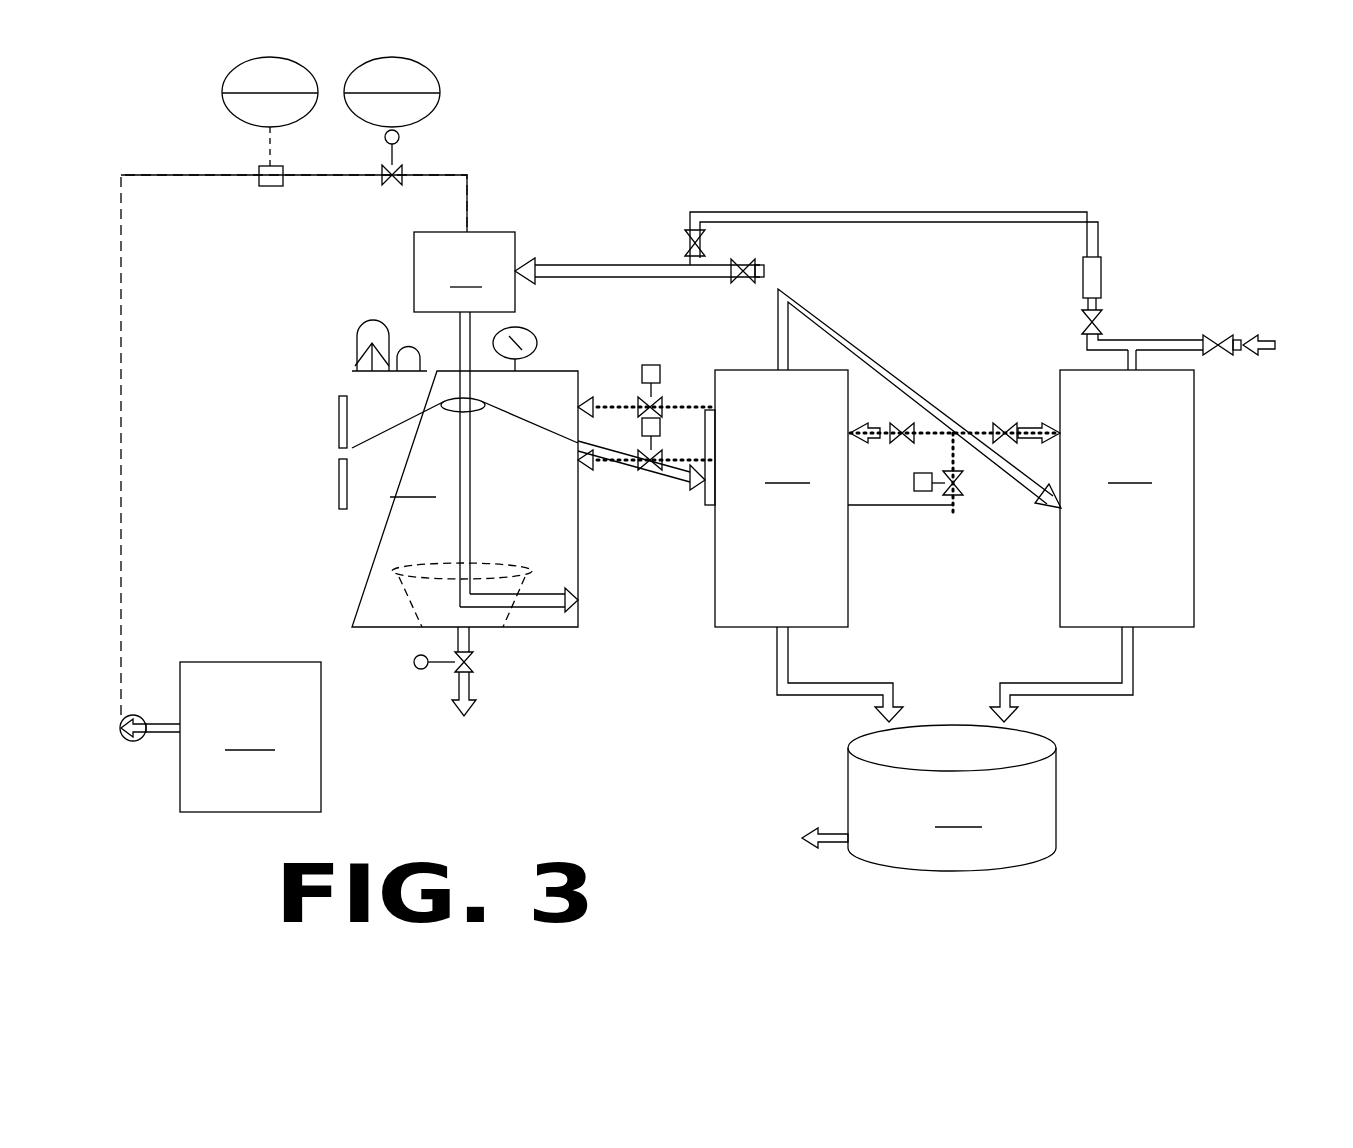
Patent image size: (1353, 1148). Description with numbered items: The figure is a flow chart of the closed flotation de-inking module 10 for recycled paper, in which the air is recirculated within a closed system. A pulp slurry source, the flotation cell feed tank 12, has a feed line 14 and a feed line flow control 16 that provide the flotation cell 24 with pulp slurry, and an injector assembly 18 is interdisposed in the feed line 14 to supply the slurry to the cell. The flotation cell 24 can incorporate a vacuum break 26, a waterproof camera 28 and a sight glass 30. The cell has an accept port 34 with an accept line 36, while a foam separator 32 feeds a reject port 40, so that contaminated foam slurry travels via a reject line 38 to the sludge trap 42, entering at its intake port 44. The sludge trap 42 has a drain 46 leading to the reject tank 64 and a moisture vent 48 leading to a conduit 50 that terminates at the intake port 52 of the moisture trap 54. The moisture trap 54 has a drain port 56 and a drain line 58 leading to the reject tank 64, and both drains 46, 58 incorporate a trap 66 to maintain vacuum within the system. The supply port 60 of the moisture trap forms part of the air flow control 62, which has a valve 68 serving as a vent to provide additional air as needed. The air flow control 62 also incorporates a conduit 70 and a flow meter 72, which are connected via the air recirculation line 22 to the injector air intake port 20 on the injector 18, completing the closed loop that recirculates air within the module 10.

The closed flotation de-inking module 10 is at (748, 140).
The flotation cell feed tank 12 is at (220, 737).
The feed line 14 is at (152, 175).
The feed line flow control 16 is at (452, 95).
The injector 18 is at (464, 272).
The injector air intake port 20 is at (527, 267).
The air recirculation line 22 is at (826, 213).
The flotation cell 24 is at (465, 469).
The vacuum break 26 is at (345, 332).
The waterproof camera 28 is at (407, 348).
The sight glass 30 is at (337, 480).
The separator 32 is at (380, 436).
The accept port 34 is at (464, 628).
The accept line 36 is at (468, 710).
The reject line 38 is at (683, 470).
The reject port 40 is at (578, 433).
The sludge trap 42 is at (781, 498).
The intake port 44 is at (714, 478).
The drain 46 is at (780, 630).
The moisture vent 48 is at (785, 372).
The conduit 50 is at (873, 360).
The intake port 52 is at (1062, 507).
The moisture trap 54 is at (1127, 498).
The drain port 56 is at (1128, 630).
The drain line 58 is at (1073, 690).
The supply port 60 is at (1132, 373).
The air flow control 62 is at (1200, 252).
The reject tank 64 is at (858, 798).
The trap 66 is at (1000, 700).
The valve 68 is at (1230, 338).
The conduit 70 is at (1148, 347).
The flow meter 72 is at (1100, 267).